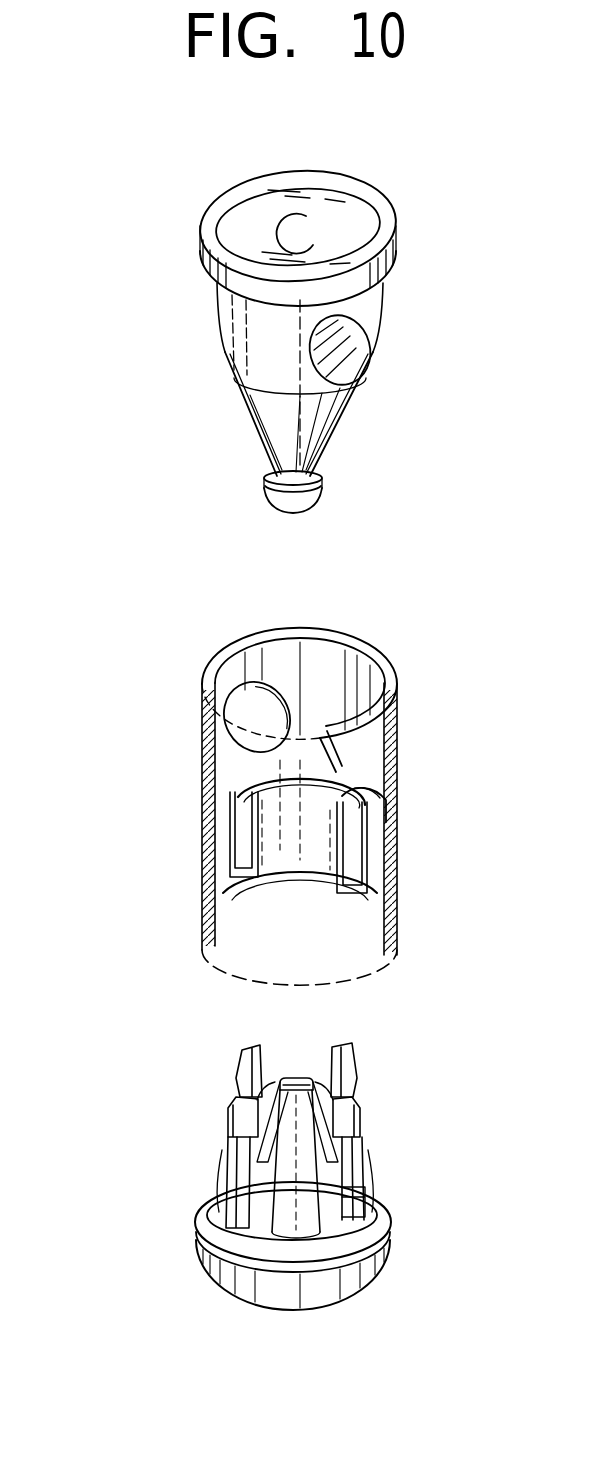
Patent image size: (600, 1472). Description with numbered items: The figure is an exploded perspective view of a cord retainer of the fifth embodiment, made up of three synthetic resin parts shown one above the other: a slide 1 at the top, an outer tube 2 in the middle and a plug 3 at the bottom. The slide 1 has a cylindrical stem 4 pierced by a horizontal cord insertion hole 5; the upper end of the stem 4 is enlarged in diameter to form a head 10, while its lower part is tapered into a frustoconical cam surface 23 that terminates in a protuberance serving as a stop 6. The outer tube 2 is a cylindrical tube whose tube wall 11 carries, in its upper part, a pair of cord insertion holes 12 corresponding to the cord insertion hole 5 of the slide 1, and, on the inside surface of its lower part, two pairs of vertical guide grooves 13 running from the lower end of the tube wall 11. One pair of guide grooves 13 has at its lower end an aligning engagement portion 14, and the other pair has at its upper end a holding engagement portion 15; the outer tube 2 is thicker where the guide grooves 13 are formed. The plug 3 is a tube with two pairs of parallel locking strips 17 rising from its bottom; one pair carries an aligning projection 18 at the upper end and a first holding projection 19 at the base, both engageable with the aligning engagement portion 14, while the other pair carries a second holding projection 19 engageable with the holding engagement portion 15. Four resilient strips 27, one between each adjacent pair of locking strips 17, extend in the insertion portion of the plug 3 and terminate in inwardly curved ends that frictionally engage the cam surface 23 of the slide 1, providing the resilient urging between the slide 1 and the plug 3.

The slide 1 is at (281, 338).
The head 10 is at (230, 214).
The cylindrical stem 4 is at (386, 294).
The cord insertion hole 5 is at (337, 355).
The frustoconical cam surface 23 is at (313, 418).
The stop 6 is at (318, 502).
The outer tube 2 is at (284, 811).
The aligning engagement portion 14 is at (230, 893).
The cord insertion holes 12 is at (250, 703).
The tube wall 11 is at (393, 720).
The holding engagement portion 15 is at (355, 798).
The guide grooves 13 is at (250, 820).
The plug 3 is at (289, 1200).
The resilient strips 27 is at (300, 1205).
The aligning projection 18 is at (358, 1102).
The holding projection 19 is at (233, 1108).
The locking strips 17 is at (232, 1190).